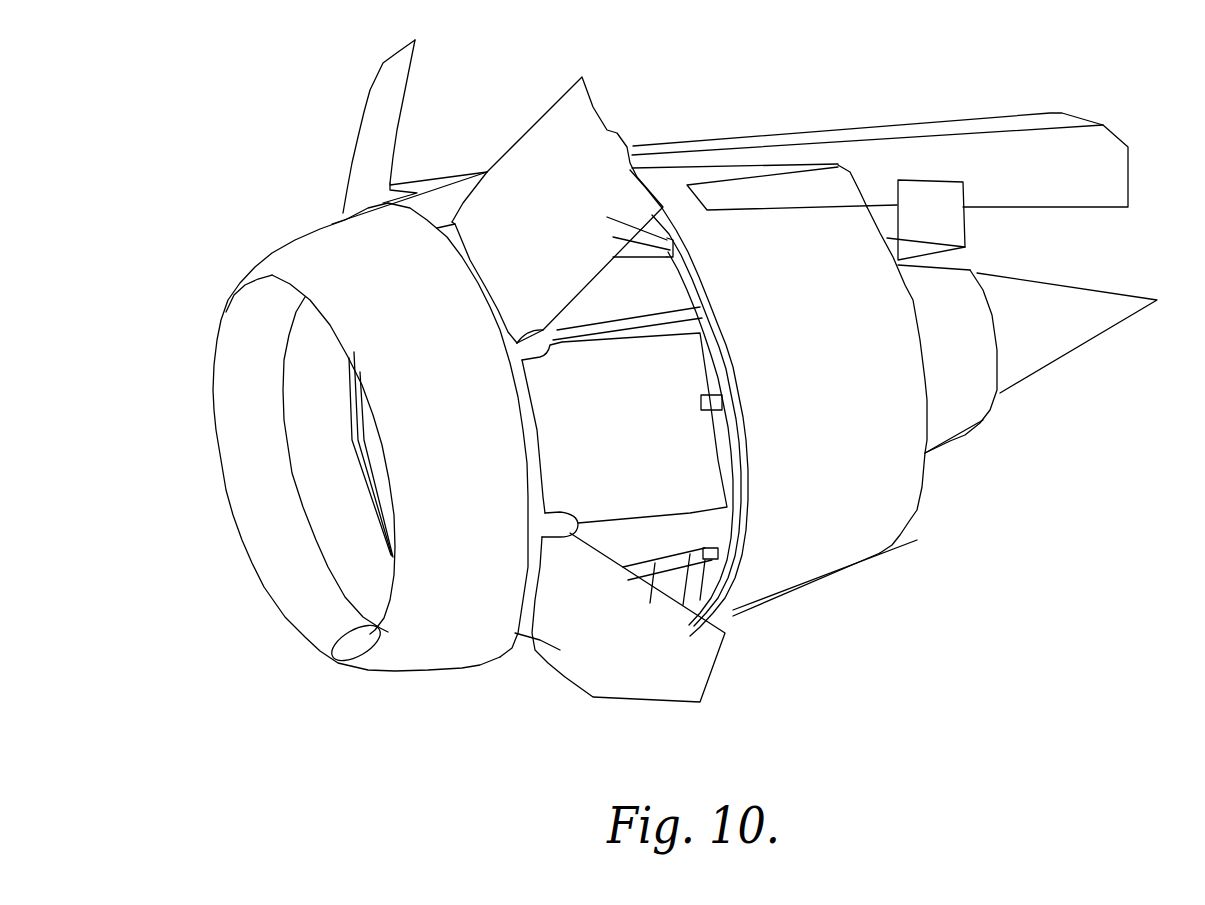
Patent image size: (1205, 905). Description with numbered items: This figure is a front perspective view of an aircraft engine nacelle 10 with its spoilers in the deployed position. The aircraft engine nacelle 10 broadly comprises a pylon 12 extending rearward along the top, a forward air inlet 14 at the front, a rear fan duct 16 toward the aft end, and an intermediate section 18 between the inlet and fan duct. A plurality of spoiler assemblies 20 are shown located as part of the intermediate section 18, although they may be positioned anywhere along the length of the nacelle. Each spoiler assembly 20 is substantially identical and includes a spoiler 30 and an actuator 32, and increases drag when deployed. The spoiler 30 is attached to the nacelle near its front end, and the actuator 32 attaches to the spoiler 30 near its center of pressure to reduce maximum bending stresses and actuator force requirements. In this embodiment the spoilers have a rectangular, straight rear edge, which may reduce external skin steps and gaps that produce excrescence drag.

The aircraft engine nacelle 10 is at (317, 91).
The pylon 12 is at (848, 116).
The forward air inlet 14 is at (213, 512).
The rear fan duct 16 is at (937, 507).
The intermediate section 18 is at (543, 690).
The spoiler assembly 20 is at (722, 470).
The spoiler 30 is at (690, 448).
The actuator 32 is at (712, 402).